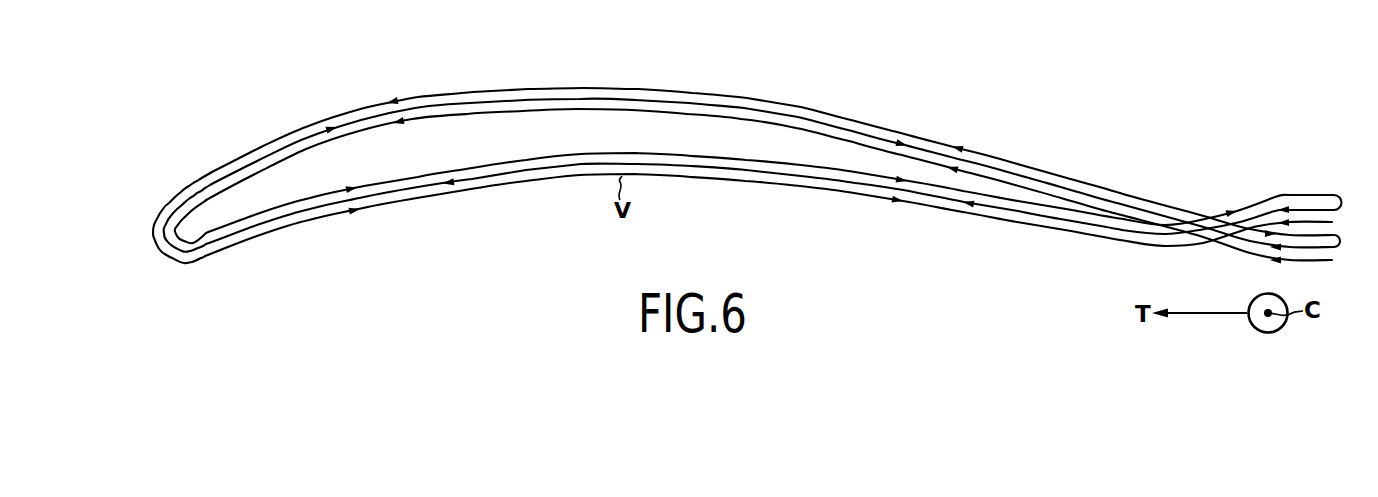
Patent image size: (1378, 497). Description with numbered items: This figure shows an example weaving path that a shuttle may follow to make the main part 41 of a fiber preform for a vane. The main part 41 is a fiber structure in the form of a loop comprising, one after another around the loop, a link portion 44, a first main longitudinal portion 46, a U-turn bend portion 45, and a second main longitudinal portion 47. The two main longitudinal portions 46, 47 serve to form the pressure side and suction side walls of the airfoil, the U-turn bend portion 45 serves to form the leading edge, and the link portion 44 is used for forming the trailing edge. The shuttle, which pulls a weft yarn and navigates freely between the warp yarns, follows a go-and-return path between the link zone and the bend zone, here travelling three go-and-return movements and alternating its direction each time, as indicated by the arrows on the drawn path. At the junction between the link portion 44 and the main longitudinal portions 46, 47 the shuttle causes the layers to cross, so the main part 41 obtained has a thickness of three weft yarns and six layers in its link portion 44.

The main part 41 is at (717, 169).
The link portion 44 is at (1311, 188).
The U-turn bend portion 45 is at (155, 250).
The first main longitudinal portion 46 is at (760, 188).
The second main longitudinal portion 47 is at (748, 98).